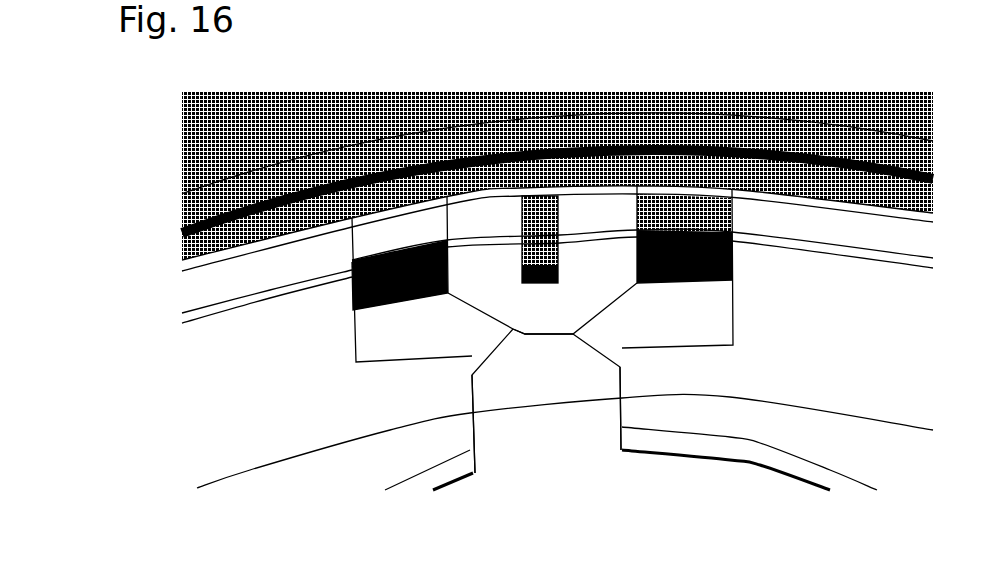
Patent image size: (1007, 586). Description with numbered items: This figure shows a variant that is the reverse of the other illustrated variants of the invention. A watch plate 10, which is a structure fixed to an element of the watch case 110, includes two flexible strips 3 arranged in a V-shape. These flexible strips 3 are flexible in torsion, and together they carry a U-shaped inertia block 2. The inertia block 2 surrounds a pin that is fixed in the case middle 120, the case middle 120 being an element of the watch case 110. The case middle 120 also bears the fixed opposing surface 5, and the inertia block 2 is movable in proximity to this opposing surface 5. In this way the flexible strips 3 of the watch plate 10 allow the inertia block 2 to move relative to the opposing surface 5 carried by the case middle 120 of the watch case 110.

The watch case 110 is at (158, 320).
The case middle 120 is at (460, 112).
The opposing surface 5 is at (548, 207).
The inertia block 2 is at (545, 318).
The flexible strips 3 is at (495, 348).
The watch plate 10 is at (393, 452).